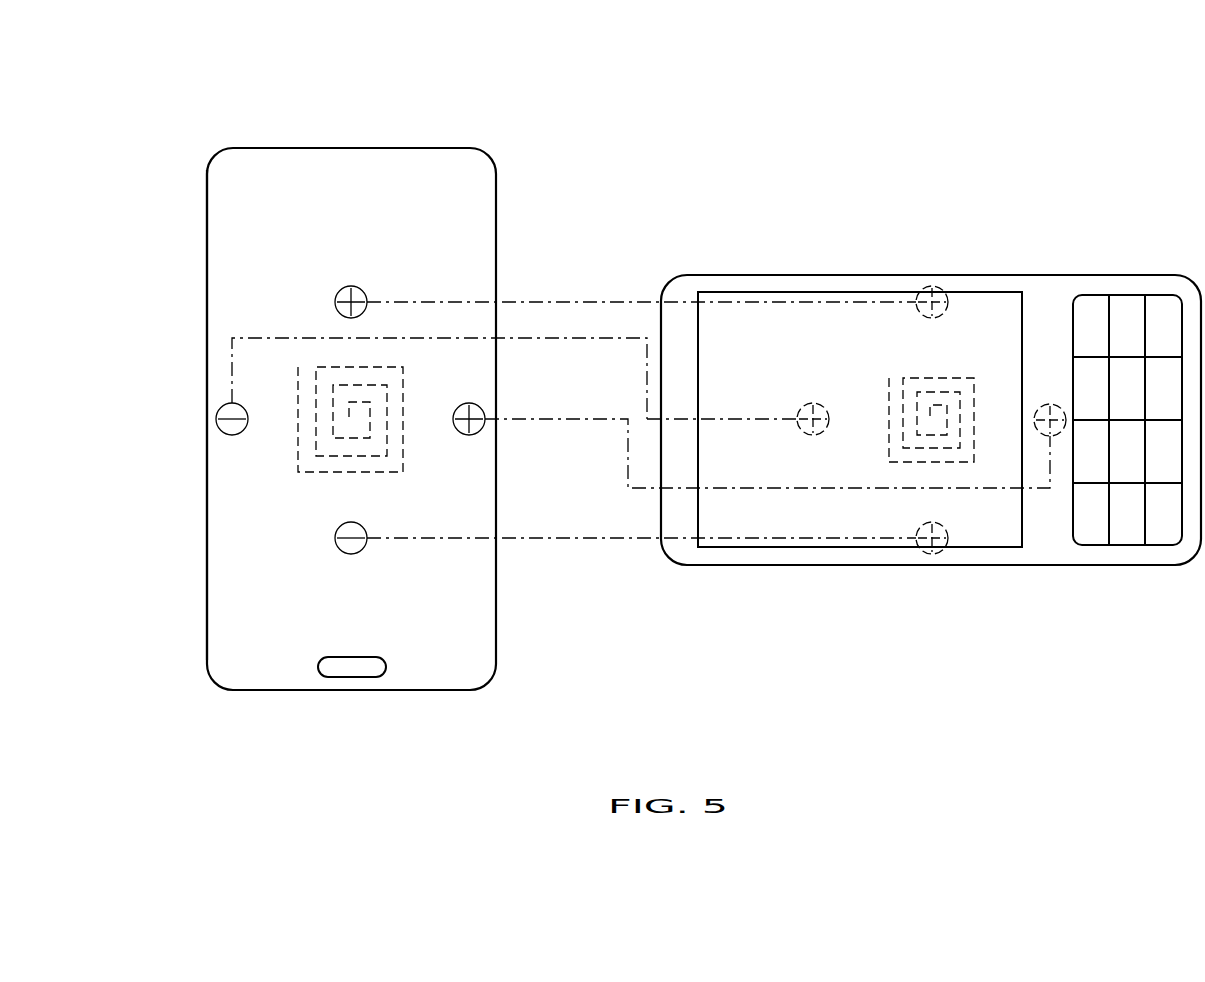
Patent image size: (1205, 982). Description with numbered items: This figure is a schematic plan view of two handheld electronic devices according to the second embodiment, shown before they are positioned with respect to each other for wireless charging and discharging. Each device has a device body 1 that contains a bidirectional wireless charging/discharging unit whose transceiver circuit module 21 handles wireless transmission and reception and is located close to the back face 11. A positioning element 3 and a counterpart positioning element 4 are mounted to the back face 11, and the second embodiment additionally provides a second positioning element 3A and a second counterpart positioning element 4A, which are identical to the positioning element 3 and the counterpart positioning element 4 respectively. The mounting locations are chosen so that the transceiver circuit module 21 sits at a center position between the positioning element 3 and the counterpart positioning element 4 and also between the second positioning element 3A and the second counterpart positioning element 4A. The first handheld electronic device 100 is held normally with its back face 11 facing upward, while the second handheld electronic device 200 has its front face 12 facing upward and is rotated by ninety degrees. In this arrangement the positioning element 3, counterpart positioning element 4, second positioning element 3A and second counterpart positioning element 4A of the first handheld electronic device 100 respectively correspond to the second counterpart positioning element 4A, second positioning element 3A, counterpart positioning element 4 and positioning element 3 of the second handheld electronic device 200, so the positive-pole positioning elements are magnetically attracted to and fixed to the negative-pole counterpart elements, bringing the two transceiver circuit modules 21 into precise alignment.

The first handheld electronic device 100 is at (476, 140).
The second handheld electronic device 200 is at (701, 268).
The device body 1 is at (207, 205).
The back face 11 is at (250, 629).
The front face 12 is at (1052, 312).
The positioning element 3 is at (351, 286).
The second positioning element 3A is at (485, 412).
The counterpart positioning element 4 is at (337, 527).
The second counterpart positioning element 4A is at (216, 415).
The transceiver circuit module 21 is at (316, 446).